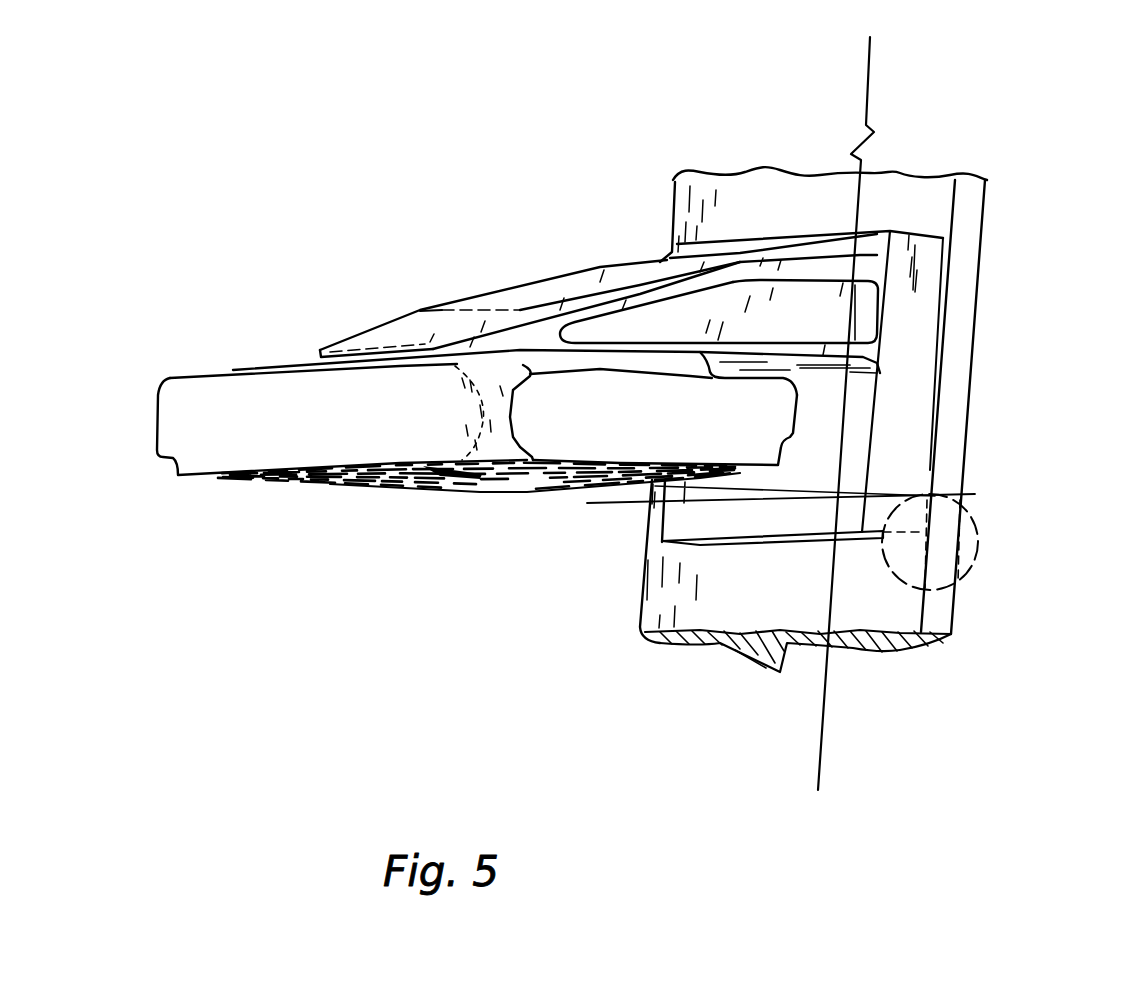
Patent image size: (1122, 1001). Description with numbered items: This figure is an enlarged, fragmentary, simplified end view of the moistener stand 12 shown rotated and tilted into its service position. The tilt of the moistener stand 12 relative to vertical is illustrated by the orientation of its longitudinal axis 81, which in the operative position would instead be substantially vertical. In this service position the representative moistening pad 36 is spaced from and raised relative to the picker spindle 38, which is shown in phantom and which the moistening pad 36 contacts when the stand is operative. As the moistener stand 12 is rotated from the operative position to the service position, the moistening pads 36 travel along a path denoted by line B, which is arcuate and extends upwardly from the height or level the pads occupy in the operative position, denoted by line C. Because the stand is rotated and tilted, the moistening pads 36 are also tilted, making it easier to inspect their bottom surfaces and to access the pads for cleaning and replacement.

The moistener stand 12 is at (955, 633).
The moistening pad 36 is at (177, 477).
The picker spindle 38 is at (978, 558).
The longitudinal axis 81 is at (820, 740).
The line B is at (817, 490).
The line C is at (588, 503).